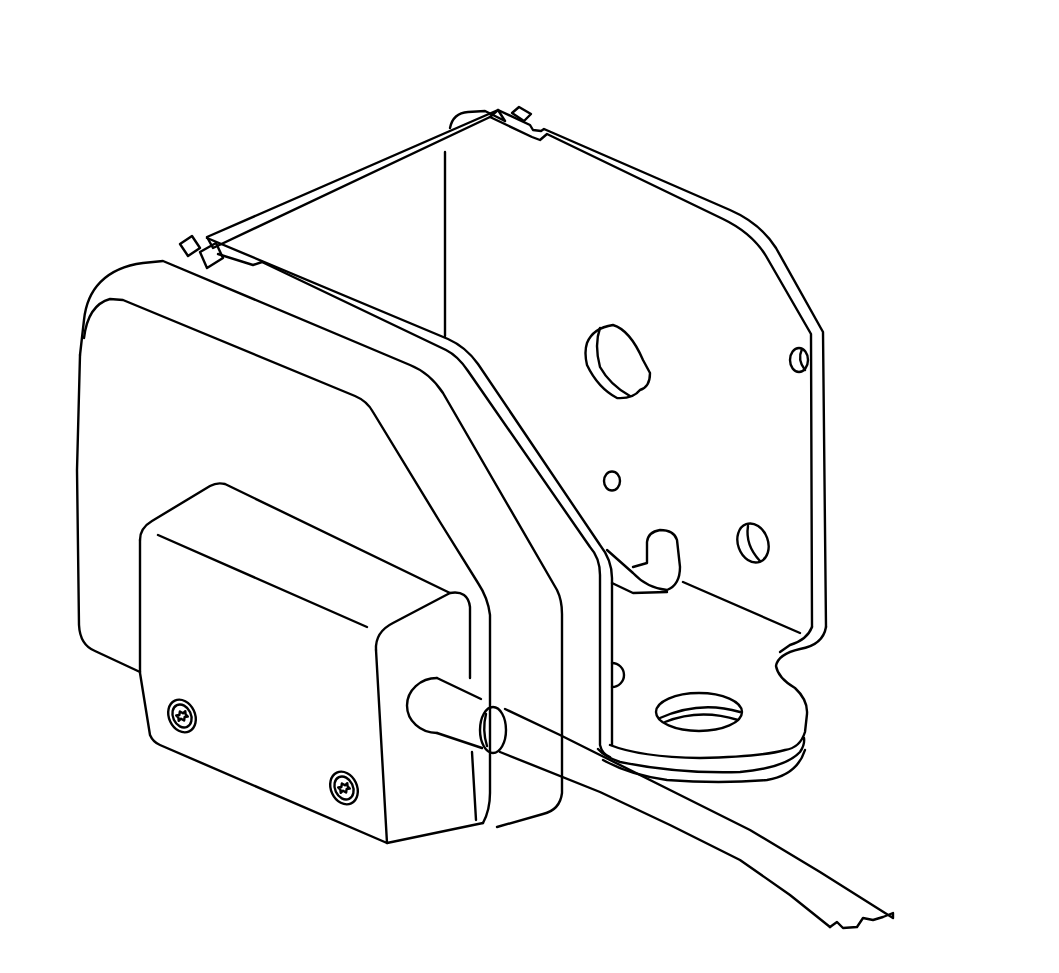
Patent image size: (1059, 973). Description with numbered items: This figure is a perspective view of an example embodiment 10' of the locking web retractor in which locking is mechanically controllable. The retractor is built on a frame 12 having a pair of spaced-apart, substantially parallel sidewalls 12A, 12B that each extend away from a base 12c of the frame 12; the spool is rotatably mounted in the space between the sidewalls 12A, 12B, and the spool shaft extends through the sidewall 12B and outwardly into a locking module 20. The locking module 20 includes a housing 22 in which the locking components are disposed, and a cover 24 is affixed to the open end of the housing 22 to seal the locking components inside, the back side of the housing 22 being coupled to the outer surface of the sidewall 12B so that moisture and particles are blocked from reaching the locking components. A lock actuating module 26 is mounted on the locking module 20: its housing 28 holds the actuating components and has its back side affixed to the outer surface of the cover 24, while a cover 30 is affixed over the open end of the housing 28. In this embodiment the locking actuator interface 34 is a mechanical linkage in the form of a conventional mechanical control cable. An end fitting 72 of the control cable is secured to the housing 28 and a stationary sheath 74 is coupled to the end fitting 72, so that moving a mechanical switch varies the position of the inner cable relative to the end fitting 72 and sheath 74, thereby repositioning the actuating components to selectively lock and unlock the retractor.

The web retractor 10' is at (459, 494).
The frame 12 is at (503, 167).
The sidewall 12A is at (650, 265).
The sidewall 12B is at (487, 378).
The base 12c is at (785, 700).
The locking module 20 is at (117, 260).
The housing 22 is at (283, 347).
The cover 24 is at (100, 397).
The lock actuating module 26 is at (135, 700).
The housing 28 is at (177, 503).
The cover 30 is at (240, 743).
The locking actuator interface 34 is at (808, 833).
The end fitting 72 is at (442, 713).
The sheath 74 is at (680, 819).